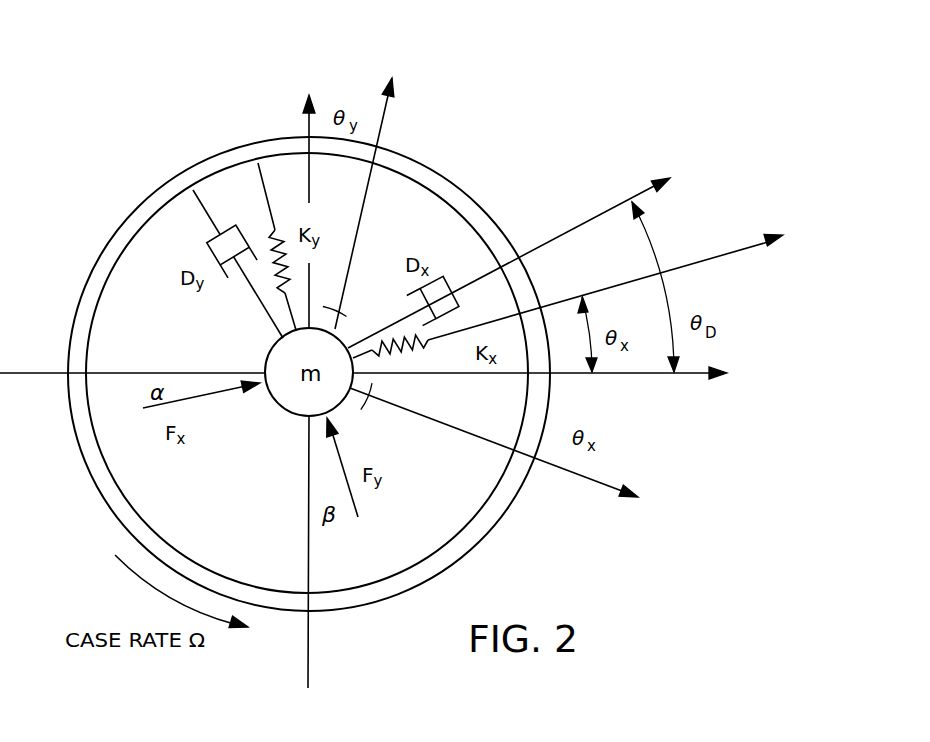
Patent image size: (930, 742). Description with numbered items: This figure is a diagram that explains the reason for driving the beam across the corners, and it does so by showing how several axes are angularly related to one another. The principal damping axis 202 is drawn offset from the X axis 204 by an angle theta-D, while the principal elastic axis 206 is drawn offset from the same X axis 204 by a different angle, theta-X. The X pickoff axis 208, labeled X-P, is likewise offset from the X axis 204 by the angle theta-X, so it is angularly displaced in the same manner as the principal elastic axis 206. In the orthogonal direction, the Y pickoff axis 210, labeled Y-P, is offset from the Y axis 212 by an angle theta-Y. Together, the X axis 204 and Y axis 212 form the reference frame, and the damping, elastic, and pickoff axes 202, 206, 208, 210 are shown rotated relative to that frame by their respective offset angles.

The principal damping axis 202 is at (592, 215).
The X axis 204 is at (642, 374).
The principal elastic axis 206 is at (713, 262).
The X pickoff axis 208 is at (572, 477).
The Y pickoff axis 210 is at (383, 120).
The Y axis 212 is at (307, 128).